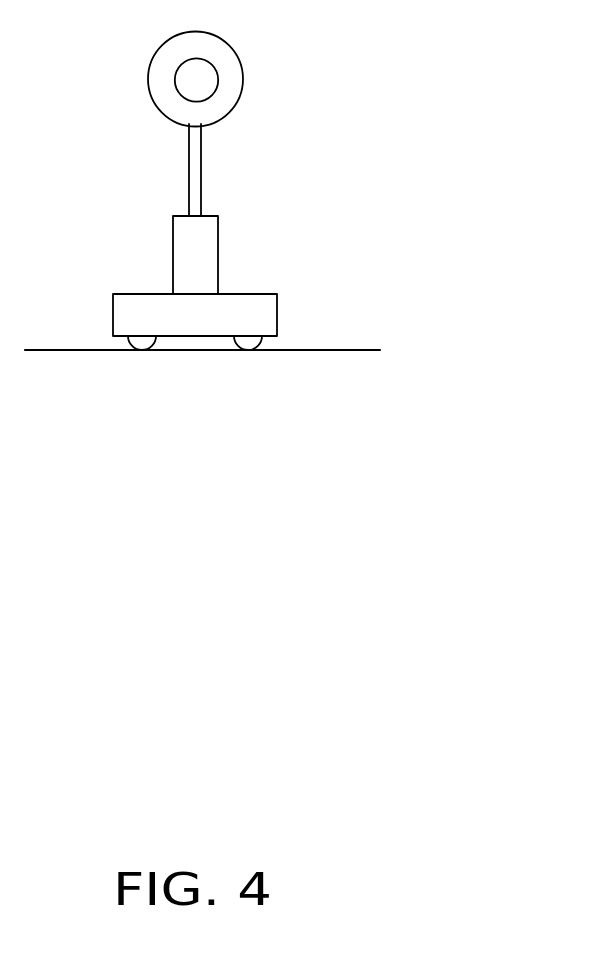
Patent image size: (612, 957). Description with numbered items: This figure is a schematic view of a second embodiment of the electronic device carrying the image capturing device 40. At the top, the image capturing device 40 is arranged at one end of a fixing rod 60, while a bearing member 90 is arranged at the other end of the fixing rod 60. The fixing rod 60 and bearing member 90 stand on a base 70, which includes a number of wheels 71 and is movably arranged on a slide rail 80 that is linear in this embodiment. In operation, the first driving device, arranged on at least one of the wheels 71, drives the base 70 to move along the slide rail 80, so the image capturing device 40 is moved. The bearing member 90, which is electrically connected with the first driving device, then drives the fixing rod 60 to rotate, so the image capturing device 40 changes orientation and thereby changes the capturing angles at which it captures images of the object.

The image capturing device 40 is at (208, 62).
The fixing rod 60 is at (197, 170).
The bearing member 90 is at (208, 243).
The base 70 is at (255, 292).
The wheels 71 is at (250, 343).
The slide rail 80 is at (360, 348).